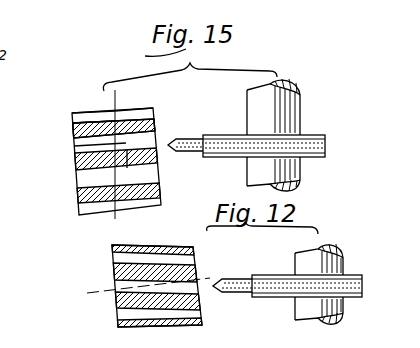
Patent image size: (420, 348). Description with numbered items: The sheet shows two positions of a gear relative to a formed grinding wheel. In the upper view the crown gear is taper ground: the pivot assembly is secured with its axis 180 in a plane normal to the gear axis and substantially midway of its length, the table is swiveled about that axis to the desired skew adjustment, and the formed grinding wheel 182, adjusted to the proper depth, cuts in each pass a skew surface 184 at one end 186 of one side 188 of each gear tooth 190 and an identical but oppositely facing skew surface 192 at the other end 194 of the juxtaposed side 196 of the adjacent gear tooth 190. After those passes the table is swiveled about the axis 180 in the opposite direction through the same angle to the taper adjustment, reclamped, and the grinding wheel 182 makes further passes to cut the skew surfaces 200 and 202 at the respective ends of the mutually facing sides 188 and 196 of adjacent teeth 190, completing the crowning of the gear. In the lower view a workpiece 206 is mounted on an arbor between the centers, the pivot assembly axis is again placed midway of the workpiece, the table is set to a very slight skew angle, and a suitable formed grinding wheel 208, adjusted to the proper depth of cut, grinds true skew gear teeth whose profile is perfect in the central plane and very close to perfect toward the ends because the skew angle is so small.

In FIG. 15, the pivot assembly axis 180 is at (125, 108).
In FIG. 15, the formed grinding wheel 182 is at (196, 136).
In FIG. 15, the skew surface 184 is at (154, 125).
In FIG. 15, the end of tooth side 186 is at (158, 113).
In FIG. 15, the side of gear tooth 188 is at (110, 118).
In FIG. 15, the gear tooth 190 is at (72, 134).
In FIG. 15, the skew surface 192 is at (78, 158).
In FIG. 15, the end of tooth side 194 is at (70, 118).
In FIG. 15, the juxtaposed side of adjacent gear tooth 196 is at (124, 165).
In FIG. 15, the skew surface 200 is at (165, 150).
In FIG. 15, the skew surface 202 is at (74, 144).
In FIG. 12, the workpiece 206 is at (107, 261).
In FIG. 12, the formed grinding wheel 208 is at (233, 293).